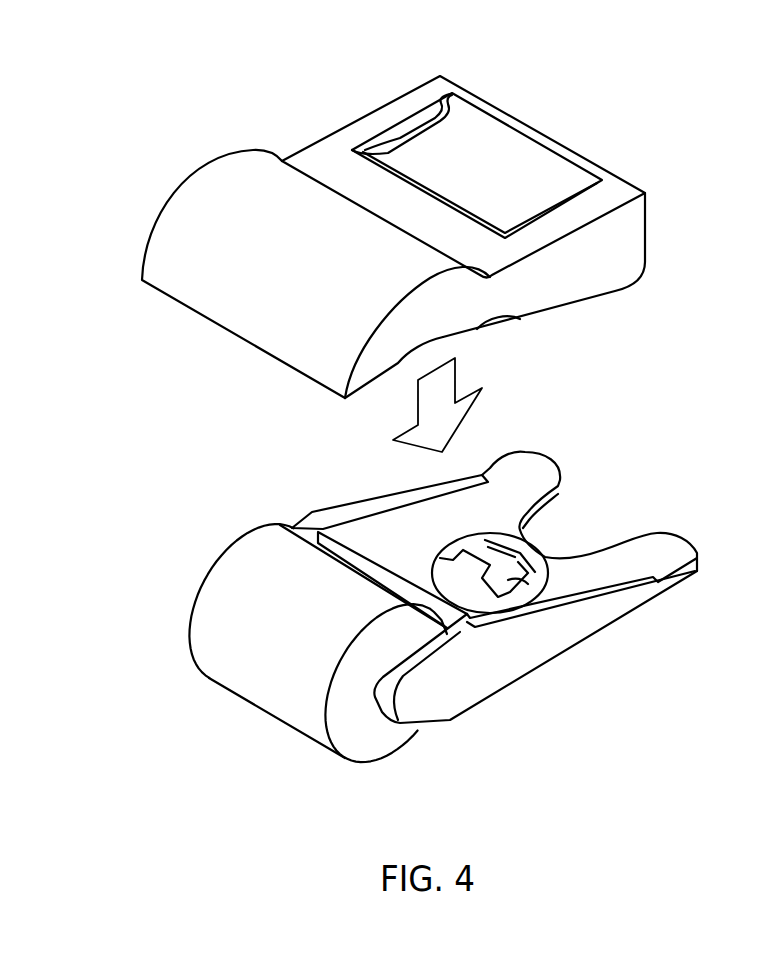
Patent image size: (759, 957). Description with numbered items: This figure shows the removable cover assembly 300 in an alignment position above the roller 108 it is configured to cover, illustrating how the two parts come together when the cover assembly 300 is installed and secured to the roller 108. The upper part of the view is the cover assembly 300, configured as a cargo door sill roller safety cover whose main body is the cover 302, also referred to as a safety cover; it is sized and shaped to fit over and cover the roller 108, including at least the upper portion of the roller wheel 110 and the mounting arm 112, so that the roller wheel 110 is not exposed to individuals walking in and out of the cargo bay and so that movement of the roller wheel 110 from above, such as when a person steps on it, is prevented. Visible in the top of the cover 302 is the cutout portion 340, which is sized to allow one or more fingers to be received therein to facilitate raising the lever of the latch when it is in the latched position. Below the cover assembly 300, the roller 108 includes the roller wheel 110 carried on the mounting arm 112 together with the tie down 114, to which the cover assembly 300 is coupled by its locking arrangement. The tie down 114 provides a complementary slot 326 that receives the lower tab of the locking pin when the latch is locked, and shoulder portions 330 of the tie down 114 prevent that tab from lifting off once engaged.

The cover assembly 300 is at (419, 227).
The cover 302 is at (220, 190).
The cutout portion 340 is at (412, 124).
The roller 108 is at (433, 614).
The roller wheel 110 is at (380, 743).
The mounting arm 112 is at (577, 632).
The tie down 114 is at (545, 560).
The complementary slot 326 is at (507, 580).
The shoulder portions 330 is at (473, 552).